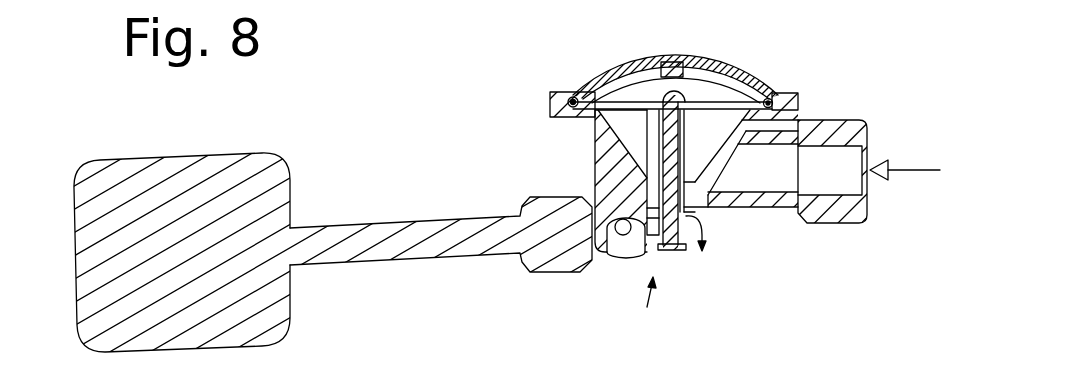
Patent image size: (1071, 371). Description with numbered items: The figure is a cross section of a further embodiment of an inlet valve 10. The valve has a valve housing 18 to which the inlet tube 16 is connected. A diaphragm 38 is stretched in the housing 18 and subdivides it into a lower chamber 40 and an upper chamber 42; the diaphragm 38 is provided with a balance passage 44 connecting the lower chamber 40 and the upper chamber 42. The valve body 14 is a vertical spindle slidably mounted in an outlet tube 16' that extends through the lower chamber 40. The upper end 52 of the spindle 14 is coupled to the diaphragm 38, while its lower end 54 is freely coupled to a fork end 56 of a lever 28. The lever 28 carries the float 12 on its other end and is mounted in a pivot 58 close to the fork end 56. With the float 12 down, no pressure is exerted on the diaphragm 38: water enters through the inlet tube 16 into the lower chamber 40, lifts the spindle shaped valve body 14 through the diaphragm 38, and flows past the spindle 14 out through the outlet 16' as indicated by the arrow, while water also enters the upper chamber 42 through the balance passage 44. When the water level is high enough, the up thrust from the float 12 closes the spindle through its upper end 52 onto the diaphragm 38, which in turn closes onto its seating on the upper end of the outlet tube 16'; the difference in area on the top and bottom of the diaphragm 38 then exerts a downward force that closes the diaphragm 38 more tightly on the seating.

The inlet valve 10 is at (650, 310).
The float 12 is at (133, 185).
The valve body 14 is at (683, 135).
The inlet tube 16 is at (832, 170).
The outlet tube 16' is at (617, 152).
The valve housing 18 is at (712, 208).
The lever 28 is at (360, 232).
The diaphragm 38 is at (630, 101).
The lower chamber 40 is at (622, 125).
The upper chamber 42 is at (695, 86).
The balance passage 44 is at (725, 95).
The upper end of the spindle 52 is at (659, 88).
The lower end of the spindle 54 is at (670, 248).
The fork end 56 is at (705, 218).
The pivot 58 is at (621, 232).